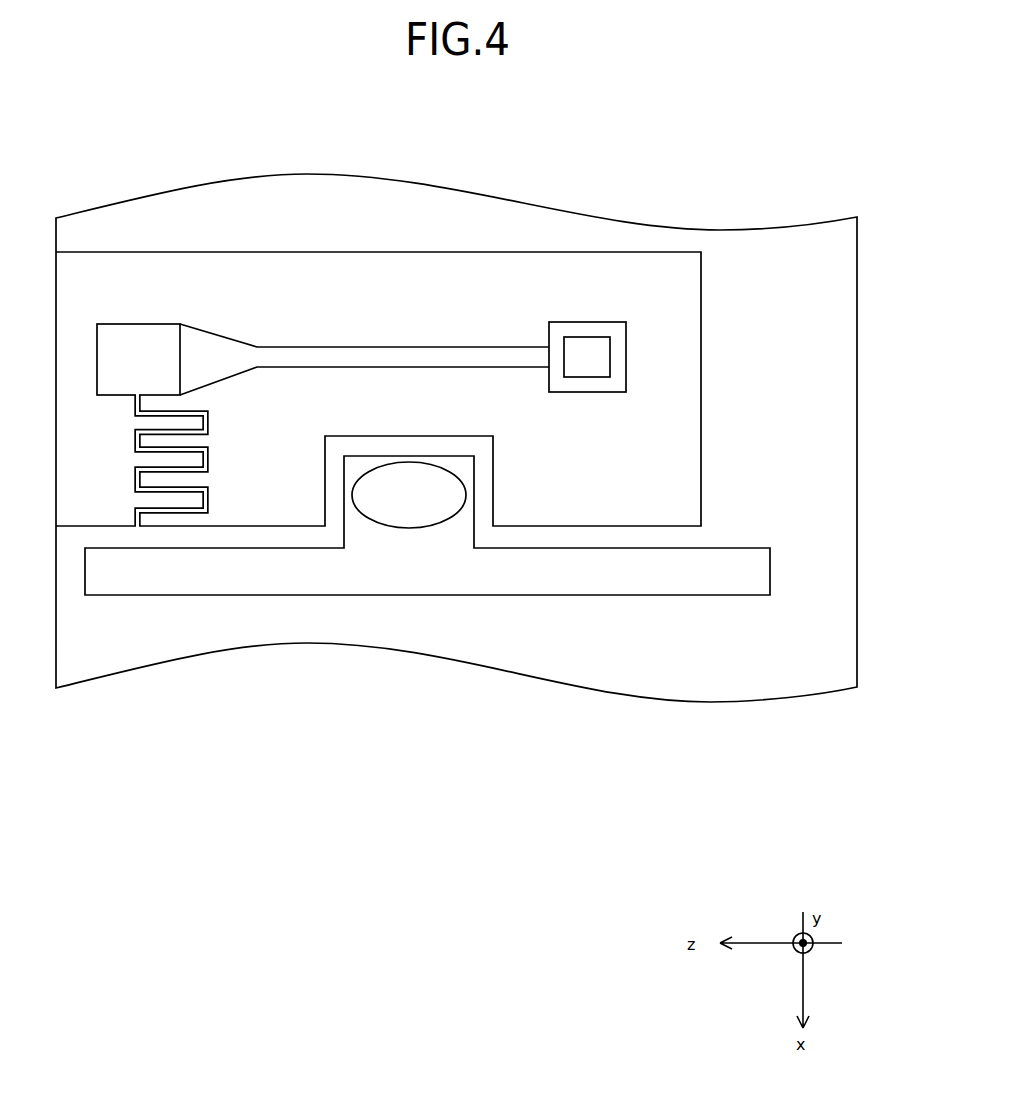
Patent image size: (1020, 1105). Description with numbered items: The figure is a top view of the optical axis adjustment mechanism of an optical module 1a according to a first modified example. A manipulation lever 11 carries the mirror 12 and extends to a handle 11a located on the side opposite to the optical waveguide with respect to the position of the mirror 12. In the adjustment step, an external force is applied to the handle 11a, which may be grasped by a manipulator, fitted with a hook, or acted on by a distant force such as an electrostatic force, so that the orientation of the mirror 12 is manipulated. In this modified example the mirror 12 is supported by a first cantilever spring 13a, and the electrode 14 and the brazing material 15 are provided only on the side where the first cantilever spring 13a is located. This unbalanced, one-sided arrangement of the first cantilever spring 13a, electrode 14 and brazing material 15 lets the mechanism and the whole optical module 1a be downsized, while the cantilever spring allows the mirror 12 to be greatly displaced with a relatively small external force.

The optical module 1a is at (680, 172).
The manipulation lever 11 is at (487, 357).
The handle 11a is at (588, 350).
The mirror 12 is at (134, 343).
The first cantilever spring 13a is at (137, 477).
The electrode 14 is at (575, 584).
The brazing material 15 is at (408, 517).